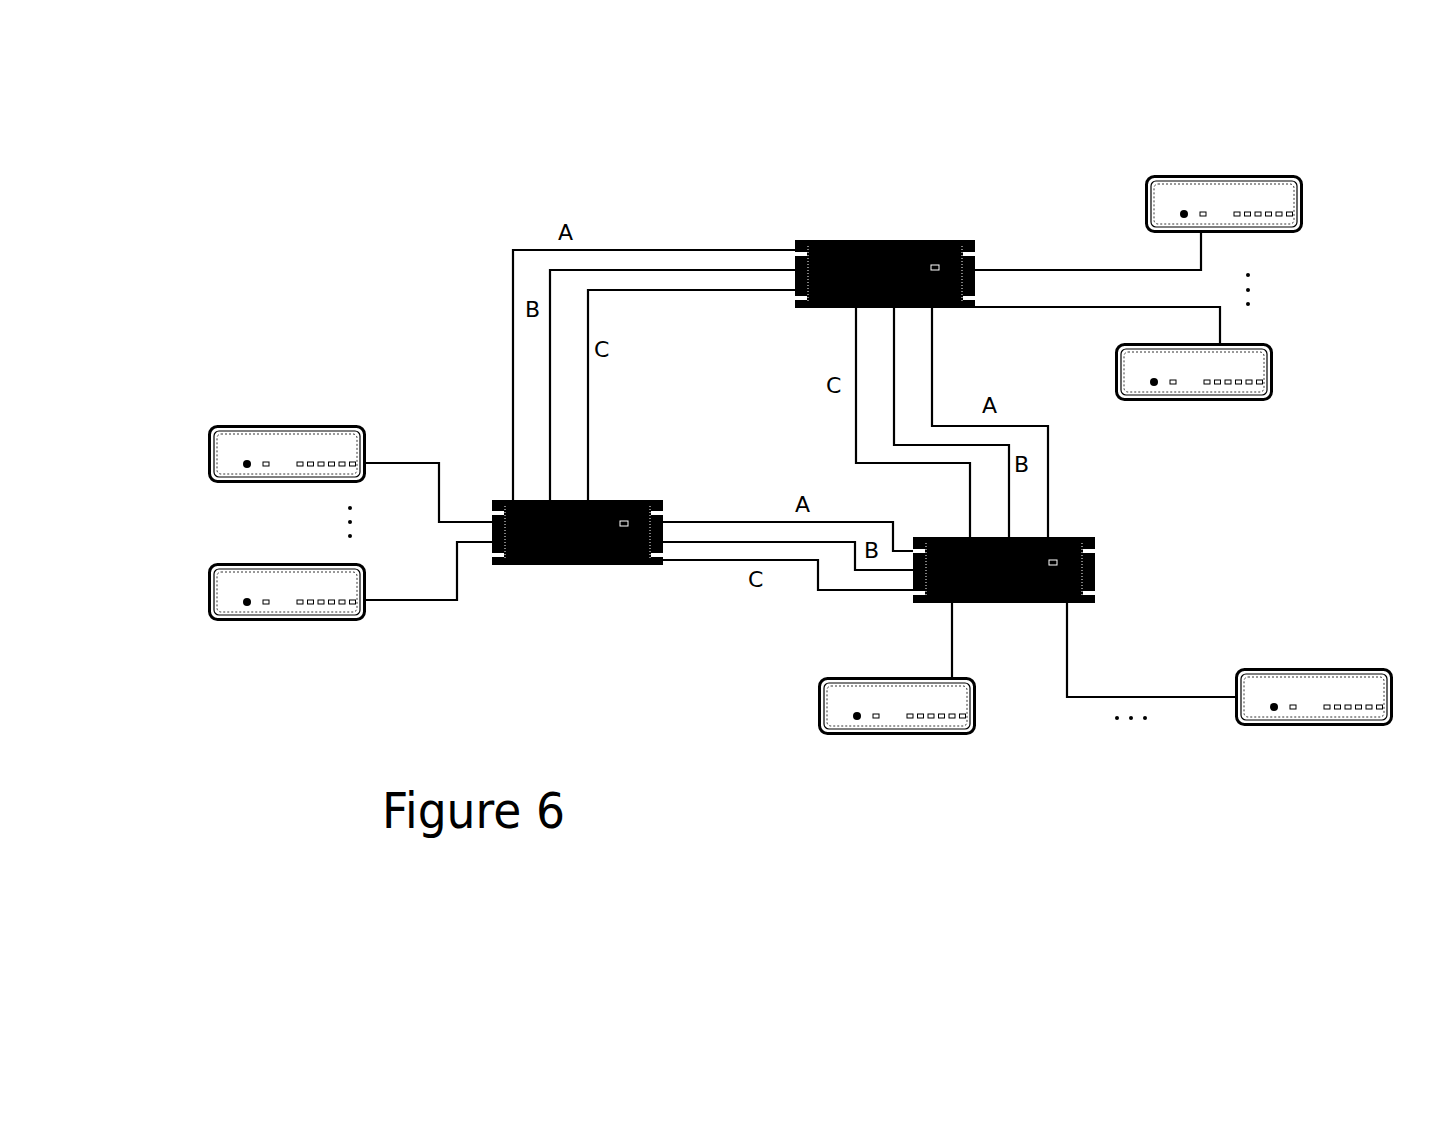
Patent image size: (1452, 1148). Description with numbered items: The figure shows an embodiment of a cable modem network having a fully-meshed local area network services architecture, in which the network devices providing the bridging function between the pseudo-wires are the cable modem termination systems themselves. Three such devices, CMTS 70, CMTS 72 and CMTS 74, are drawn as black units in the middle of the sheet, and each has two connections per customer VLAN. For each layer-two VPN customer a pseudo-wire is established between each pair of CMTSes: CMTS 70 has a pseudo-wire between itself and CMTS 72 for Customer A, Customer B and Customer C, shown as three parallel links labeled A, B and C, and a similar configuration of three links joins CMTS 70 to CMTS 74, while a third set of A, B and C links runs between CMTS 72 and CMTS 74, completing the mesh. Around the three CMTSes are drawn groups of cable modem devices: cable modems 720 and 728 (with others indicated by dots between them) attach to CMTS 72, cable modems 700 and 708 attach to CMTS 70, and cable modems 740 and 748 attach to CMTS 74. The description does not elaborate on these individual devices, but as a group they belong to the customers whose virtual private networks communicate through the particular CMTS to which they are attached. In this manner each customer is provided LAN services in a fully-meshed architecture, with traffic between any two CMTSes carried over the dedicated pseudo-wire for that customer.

The CMTS 70 is at (873, 240).
The CMTS 72 is at (613, 500).
The CMTS 74 is at (1095, 567).
The terminal device 700 is at (1303, 205).
The terminal device 708 is at (1273, 365).
The terminal device 720 is at (208, 468).
The terminal device 728 is at (208, 592).
The terminal device 740 is at (895, 735).
The terminal device 748 is at (1303, 725).